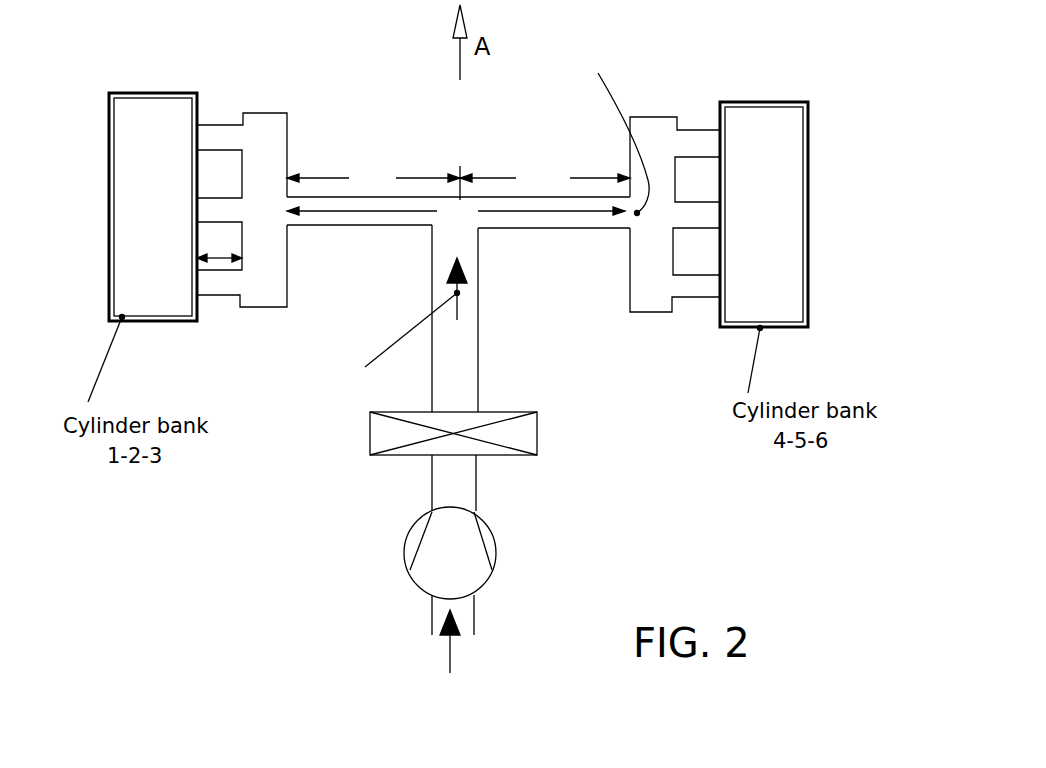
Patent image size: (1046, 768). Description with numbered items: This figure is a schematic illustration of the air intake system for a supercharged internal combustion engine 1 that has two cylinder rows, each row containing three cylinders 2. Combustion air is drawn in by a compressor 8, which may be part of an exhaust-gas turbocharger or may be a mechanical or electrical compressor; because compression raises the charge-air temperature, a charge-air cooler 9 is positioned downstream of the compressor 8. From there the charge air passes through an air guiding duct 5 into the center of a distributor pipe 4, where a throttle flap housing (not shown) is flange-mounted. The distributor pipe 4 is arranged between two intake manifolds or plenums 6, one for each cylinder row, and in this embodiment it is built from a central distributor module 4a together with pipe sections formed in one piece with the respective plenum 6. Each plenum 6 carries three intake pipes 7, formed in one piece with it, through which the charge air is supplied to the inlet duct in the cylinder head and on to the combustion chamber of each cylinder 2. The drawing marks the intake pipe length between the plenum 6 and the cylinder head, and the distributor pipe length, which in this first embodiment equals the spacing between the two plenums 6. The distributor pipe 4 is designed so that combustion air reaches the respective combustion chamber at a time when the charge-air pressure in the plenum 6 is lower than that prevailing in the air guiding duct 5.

The internal combustion engine 1 is at (692, 529).
The cylinder 2 is at (162, 151).
The distributor pipe 4 is at (377, 221).
The distributor module 4a is at (463, 245).
The air guiding duct 5 is at (477, 354).
The intake manifold or plenum 6 is at (262, 123).
The intake pipe 7 is at (215, 133).
The compressor 8 is at (493, 542).
The charge-air cooler 9 is at (535, 435).